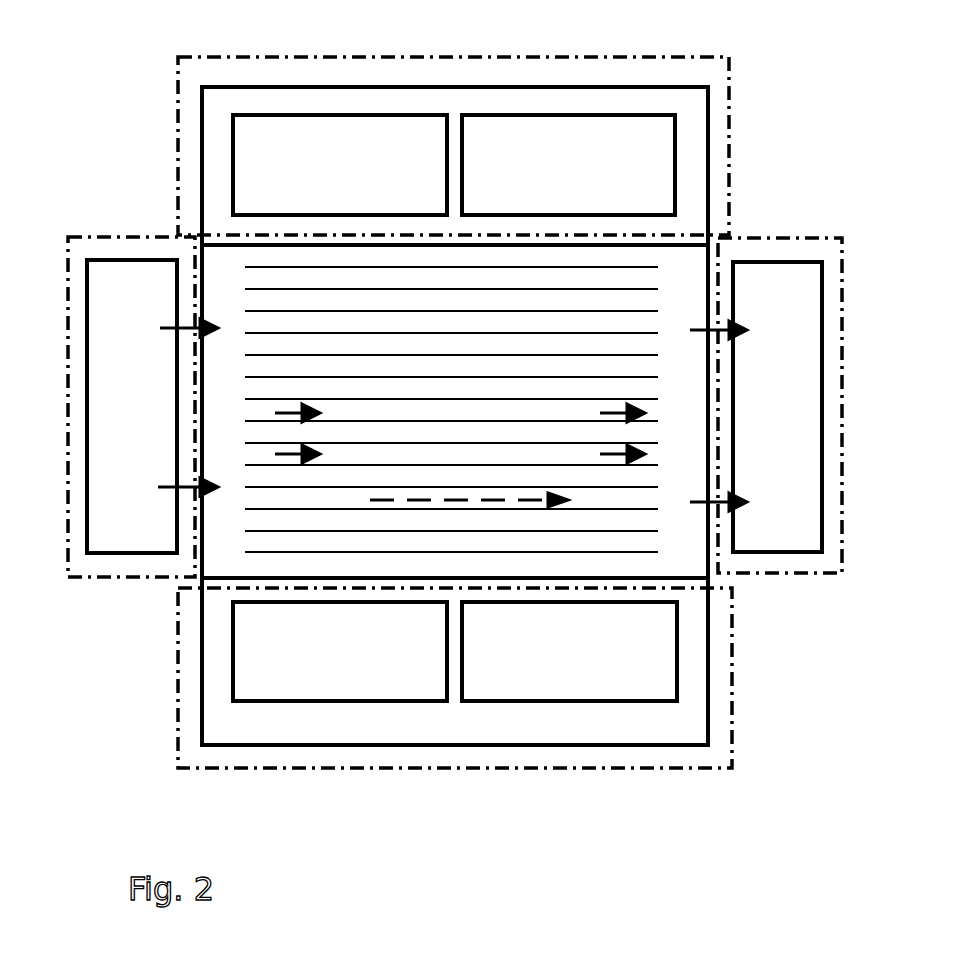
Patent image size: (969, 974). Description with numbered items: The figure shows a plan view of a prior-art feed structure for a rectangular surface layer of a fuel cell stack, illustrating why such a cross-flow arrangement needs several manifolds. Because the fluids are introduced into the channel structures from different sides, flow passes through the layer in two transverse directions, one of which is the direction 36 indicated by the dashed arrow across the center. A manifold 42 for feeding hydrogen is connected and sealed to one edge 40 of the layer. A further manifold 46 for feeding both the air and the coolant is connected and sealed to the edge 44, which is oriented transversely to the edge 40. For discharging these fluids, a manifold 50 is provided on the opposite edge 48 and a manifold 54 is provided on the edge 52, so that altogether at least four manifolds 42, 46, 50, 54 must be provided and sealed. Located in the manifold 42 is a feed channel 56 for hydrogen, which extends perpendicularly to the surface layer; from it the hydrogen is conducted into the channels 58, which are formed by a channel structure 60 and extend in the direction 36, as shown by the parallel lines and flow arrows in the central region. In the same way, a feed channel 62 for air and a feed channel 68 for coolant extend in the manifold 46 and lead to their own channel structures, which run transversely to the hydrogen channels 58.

The direction 36 is at (418, 502).
The edge 40 is at (198, 267).
The manifold 42 is at (138, 240).
The edge 44 is at (230, 578).
The manifold 46 is at (178, 668).
The edge 48 is at (710, 557).
The manifold 50 is at (805, 573).
The edge 52 is at (690, 245).
The manifold 54 is at (733, 122).
The feed channel 56 is at (147, 426).
The channels 58 is at (260, 366).
The channel structure 60 is at (234, 282).
The feed channel 62 is at (592, 673).
The feed channel 68 is at (358, 675).